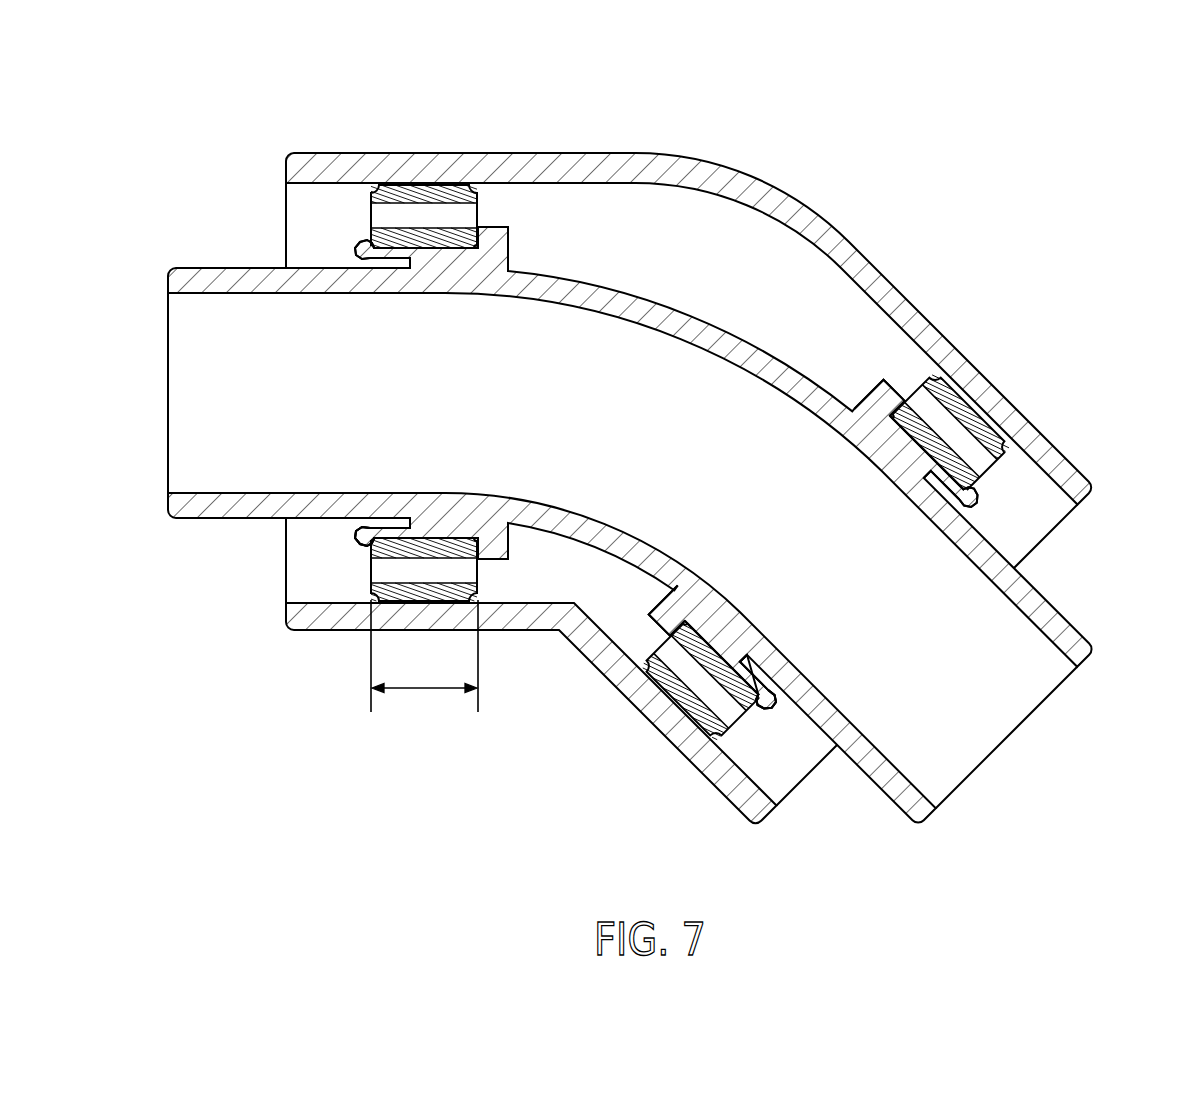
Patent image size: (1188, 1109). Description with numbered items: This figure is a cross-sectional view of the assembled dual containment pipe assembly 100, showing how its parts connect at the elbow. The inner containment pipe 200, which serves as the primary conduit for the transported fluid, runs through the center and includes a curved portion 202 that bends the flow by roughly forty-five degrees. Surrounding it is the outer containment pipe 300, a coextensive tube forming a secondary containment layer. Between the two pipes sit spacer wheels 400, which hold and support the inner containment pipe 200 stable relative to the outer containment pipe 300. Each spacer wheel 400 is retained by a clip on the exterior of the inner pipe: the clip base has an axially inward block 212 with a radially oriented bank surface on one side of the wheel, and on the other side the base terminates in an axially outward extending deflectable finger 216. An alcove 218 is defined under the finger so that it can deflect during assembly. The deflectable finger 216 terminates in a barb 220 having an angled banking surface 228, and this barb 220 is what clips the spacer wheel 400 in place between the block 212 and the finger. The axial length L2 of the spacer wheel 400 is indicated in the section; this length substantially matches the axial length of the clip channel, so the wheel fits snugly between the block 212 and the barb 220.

The dual containment pipe assembly 100 is at (1114, 117).
The inner containment pipe 200 is at (872, 795).
The curved portion 202 is at (652, 307).
The axially inward block 212 is at (500, 236).
The deflectable finger 216 is at (364, 543).
The alcove 218 is at (335, 525).
The barb 220 is at (356, 243).
The angled banking surface 228 is at (980, 500).
The outer containment pipe 300 is at (878, 262).
The spacer wheel 400 is at (424, 172).
The axial length L2 is at (422, 692).